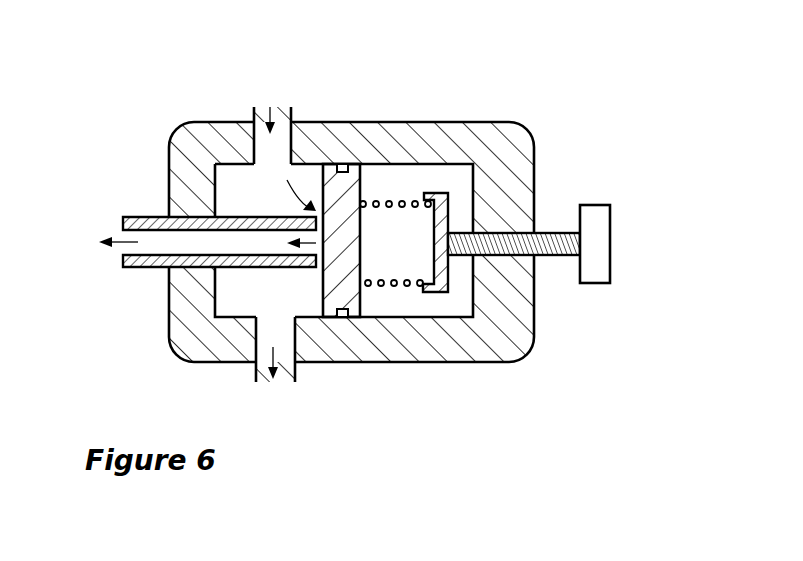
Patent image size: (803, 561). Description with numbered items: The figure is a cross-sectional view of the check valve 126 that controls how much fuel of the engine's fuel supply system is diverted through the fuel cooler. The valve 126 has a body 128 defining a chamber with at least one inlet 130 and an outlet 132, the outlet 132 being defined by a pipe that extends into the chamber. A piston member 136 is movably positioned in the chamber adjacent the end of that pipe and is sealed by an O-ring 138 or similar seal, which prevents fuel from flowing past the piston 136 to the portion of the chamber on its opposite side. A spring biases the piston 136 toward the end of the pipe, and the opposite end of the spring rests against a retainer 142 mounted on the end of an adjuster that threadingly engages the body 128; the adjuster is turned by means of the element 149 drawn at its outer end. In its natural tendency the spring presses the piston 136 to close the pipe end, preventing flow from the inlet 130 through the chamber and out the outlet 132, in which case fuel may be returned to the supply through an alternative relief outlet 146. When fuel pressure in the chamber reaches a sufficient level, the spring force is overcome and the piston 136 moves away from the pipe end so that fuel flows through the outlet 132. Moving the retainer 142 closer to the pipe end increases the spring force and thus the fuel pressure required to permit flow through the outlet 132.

The valve 126 is at (407, 239).
The body 128 is at (520, 313).
The inlet 130 is at (292, 121).
The outlet 132 is at (142, 217).
The piston member 136 is at (342, 288).
The O-ring 138 is at (343, 170).
The retainer 142 is at (443, 285).
The relief outlet 146 is at (403, 200).
The adjusting screw knob 149 is at (597, 243).